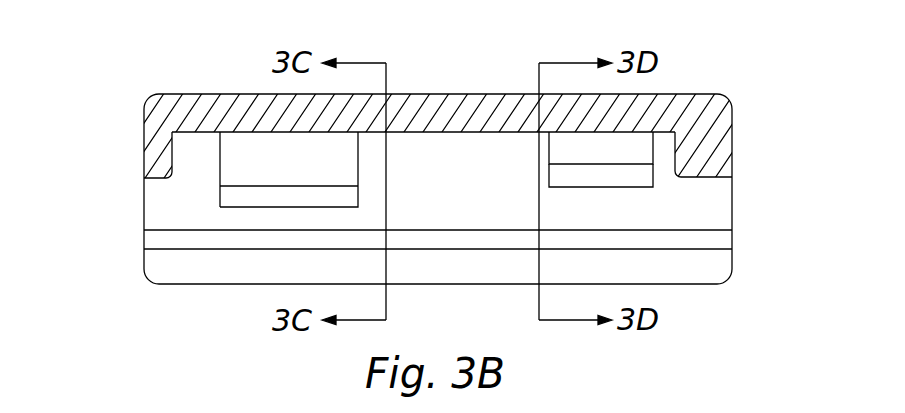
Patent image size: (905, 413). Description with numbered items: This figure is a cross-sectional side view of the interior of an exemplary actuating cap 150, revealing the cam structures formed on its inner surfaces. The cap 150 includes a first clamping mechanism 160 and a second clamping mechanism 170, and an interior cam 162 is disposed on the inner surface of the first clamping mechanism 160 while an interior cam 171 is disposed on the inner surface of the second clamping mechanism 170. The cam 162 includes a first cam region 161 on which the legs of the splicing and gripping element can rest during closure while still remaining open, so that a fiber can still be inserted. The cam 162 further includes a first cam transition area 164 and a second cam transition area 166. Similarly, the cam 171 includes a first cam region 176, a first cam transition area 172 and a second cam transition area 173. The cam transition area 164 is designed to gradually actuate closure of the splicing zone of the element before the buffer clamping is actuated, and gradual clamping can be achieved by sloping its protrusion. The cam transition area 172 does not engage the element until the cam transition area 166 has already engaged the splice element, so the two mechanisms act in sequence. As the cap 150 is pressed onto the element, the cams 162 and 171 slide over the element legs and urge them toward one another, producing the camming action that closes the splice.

The cap 150 is at (683, 63).
The first clamping mechanism 160 is at (196, 287).
The first cam region 161 is at (272, 217).
The interior cam 162 is at (230, 163).
The first cam transition area 164 is at (223, 198).
The second cam transition area 166 is at (220, 180).
The second clamping mechanism 170 is at (675, 284).
The interior cam 171 is at (666, 152).
The first cam transition area 172 is at (653, 177).
The second cam transition area 173 is at (643, 142).
The first cam region 176 is at (613, 210).